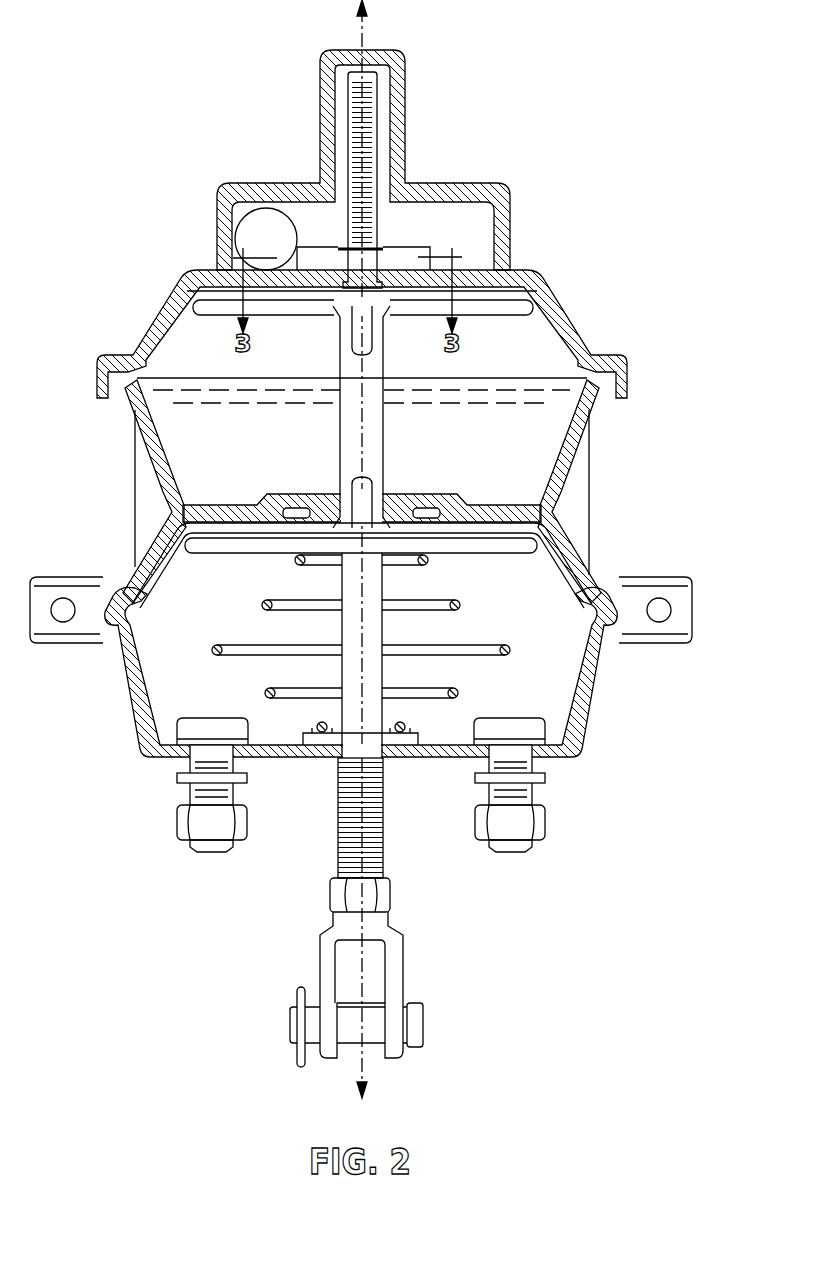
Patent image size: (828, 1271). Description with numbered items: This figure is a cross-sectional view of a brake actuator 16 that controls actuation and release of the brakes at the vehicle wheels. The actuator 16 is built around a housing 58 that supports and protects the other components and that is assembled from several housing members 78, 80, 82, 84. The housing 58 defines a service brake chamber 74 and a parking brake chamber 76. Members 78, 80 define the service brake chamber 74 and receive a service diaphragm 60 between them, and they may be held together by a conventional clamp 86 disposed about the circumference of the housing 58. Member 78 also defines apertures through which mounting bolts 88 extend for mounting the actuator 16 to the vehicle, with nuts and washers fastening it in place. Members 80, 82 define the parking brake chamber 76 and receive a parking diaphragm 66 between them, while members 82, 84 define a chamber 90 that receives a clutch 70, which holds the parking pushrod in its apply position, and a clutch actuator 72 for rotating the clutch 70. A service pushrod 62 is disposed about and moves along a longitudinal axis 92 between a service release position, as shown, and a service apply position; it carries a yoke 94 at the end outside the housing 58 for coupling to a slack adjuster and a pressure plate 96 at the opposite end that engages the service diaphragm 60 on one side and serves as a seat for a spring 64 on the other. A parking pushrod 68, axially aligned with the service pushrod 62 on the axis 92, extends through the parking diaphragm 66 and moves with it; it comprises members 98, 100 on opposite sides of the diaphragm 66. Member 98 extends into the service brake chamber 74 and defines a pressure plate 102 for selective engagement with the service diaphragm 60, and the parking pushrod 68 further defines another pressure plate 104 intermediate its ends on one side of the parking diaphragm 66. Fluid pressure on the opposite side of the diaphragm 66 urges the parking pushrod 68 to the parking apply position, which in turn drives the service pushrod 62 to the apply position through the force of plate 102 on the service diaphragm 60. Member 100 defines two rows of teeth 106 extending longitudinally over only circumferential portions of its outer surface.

The actuator 16 is at (190, 141).
The housing 58 is at (150, 490).
The service diaphragm 60 is at (160, 572).
The service pushrod 62 is at (370, 753).
The spring 64 is at (510, 647).
The parking diaphragm 66 is at (165, 340).
The parking pushrod 68 is at (362, 412).
The clutch 70 is at (433, 251).
The clutch actuator 72 is at (257, 232).
The service brake chamber 74 is at (183, 692).
The parking brake chamber 76 is at (523, 403).
The housing member 78 is at (123, 665).
The housing member 80 is at (137, 565).
The housing member 82 is at (168, 303).
The housing member 84 is at (328, 125).
The clamp 86 is at (697, 607).
The mounting bolts 88 is at (200, 765).
The chamber 90 is at (447, 213).
The longitudinal axis 92 is at (363, 1068).
The yoke 94 is at (325, 1023).
The pressure plate 96 is at (485, 545).
The member 98 is at (350, 450).
The member 100 is at (372, 100).
The pressure plate 102 is at (297, 517).
The pressure plate 104 is at (400, 307).
The teeth 106 is at (367, 167).